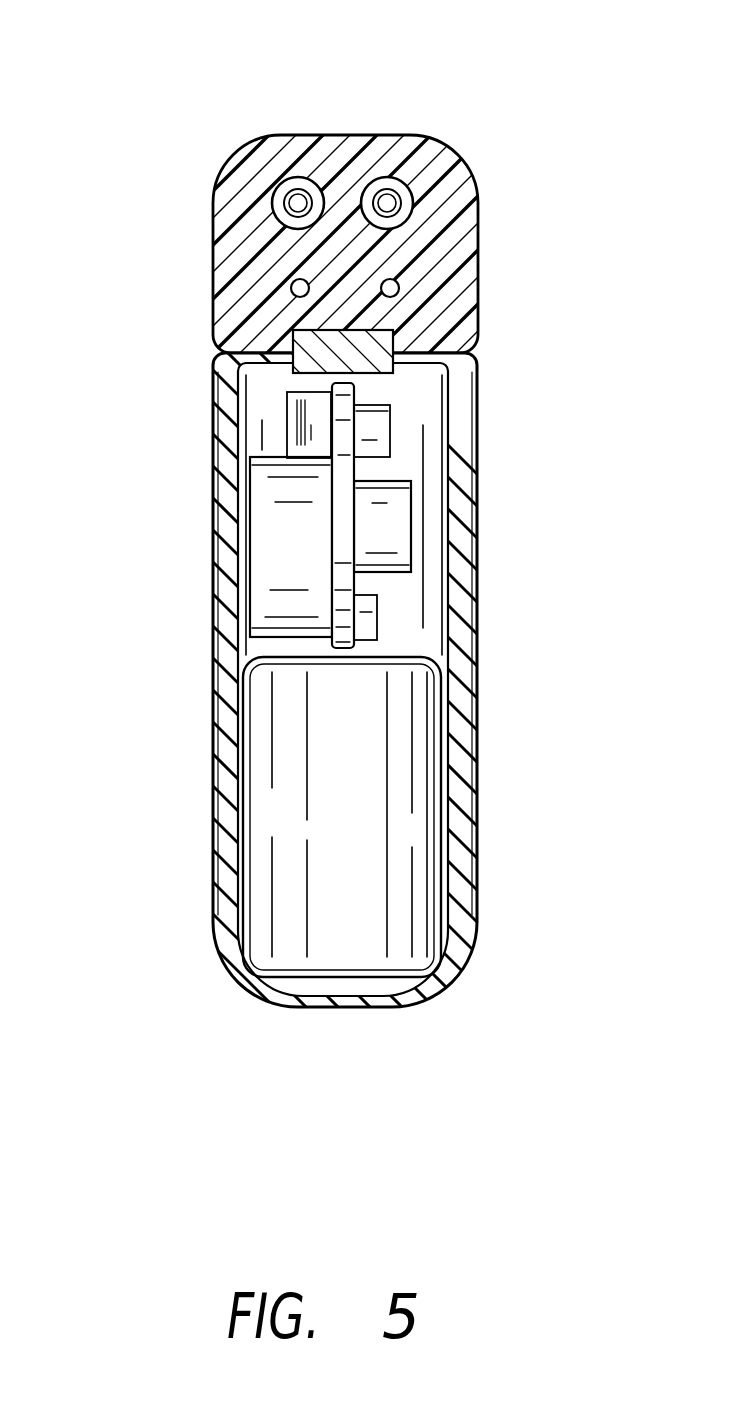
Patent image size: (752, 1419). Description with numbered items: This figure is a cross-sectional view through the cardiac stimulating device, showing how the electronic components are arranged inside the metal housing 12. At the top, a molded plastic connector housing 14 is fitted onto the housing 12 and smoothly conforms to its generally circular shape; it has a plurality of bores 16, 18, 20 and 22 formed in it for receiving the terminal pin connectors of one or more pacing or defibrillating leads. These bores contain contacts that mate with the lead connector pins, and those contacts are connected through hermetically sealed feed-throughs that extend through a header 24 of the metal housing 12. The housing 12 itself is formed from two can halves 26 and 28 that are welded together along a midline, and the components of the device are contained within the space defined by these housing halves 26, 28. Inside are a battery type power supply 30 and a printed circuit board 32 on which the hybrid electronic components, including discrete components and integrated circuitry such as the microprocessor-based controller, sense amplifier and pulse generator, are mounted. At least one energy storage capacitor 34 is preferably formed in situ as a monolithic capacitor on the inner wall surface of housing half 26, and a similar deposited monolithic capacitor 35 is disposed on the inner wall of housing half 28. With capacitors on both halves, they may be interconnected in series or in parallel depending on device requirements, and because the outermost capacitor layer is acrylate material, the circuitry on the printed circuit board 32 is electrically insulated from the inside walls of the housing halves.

The metal housing 12 is at (298, 1006).
The connector housing 14 is at (462, 172).
The bore 16 is at (298, 175).
The bore 18 is at (388, 175).
The bore 20 is at (291, 283).
The bore 22 is at (398, 279).
The header 24 is at (300, 340).
The housing half 26 is at (476, 545).
The housing half 28 is at (222, 544).
The battery type power supply 30 is at (359, 841).
The printed circuit board 32 is at (347, 572).
The energy storage capacitor 34 is at (470, 749).
The deposited monolithic capacitor 35 is at (232, 751).